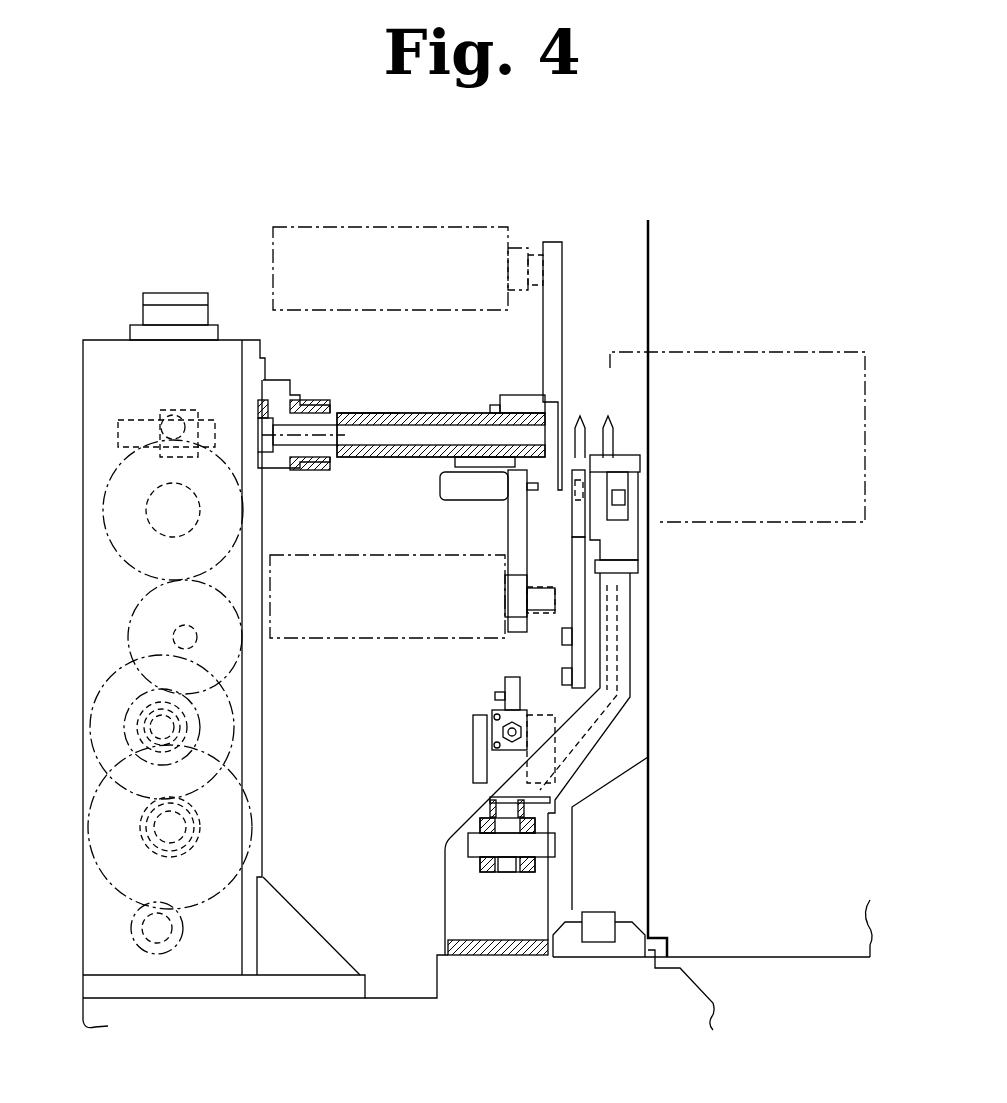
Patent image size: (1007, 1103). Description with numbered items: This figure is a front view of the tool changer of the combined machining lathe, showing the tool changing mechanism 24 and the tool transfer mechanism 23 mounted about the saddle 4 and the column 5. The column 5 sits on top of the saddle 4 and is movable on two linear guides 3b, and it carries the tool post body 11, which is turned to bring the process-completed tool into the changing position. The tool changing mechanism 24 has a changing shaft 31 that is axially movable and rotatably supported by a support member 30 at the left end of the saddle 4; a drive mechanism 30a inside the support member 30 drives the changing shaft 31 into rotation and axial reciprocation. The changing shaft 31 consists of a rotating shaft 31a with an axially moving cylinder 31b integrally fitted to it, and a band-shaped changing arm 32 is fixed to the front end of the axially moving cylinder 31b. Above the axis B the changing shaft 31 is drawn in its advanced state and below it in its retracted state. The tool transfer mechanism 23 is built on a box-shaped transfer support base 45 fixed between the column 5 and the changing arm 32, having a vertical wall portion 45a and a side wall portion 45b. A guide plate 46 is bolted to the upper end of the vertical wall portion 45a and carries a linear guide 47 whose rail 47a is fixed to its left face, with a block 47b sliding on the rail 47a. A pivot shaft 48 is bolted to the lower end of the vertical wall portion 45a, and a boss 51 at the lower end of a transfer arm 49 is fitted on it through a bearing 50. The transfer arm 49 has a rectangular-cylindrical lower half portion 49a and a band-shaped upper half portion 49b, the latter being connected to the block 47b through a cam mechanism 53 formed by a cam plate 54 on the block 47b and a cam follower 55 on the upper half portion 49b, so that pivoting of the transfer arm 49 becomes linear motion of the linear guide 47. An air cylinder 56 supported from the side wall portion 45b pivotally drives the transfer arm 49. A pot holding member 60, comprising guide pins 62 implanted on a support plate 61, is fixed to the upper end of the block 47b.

The linear guides 3b is at (650, 923).
The saddle 4 is at (707, 995).
The column 5 is at (645, 243).
The tool post body 11 is at (778, 350).
The tool transfer mechanism 23 is at (634, 650).
The tool changing mechanism 24 is at (503, 212).
The support member 30 is at (85, 400).
The drive mechanism 30a is at (128, 607).
The changing shaft 31 is at (415, 408).
The rotating shaft 31a is at (372, 412).
The axially moving cylinder 31b is at (352, 458).
The changing arm 32 is at (566, 264).
The transfer support base 45 is at (437, 855).
The vertical wall portion 45a is at (552, 890).
The side wall portion 45b is at (610, 600).
The guide plate 46 is at (640, 555).
The linear guide 47 is at (686, 484).
The rail 47a is at (625, 495).
The block 47b is at (628, 480).
The pivot shaft 48 is at (467, 852).
The transfer arm 49 is at (565, 657).
The lower half portion 49a is at (480, 787).
The upper half portion 49b is at (583, 530).
The bearing 50 is at (482, 872).
The boss 51 is at (506, 866).
The cam mechanism 53 is at (494, 551).
The cam plate 54 is at (563, 527).
The cam follower 55 is at (570, 507).
The air cylinder 56 is at (490, 708).
The pot holding member 60 is at (678, 483).
The support plate 61 is at (637, 457).
The guide pins 62 is at (608, 416).